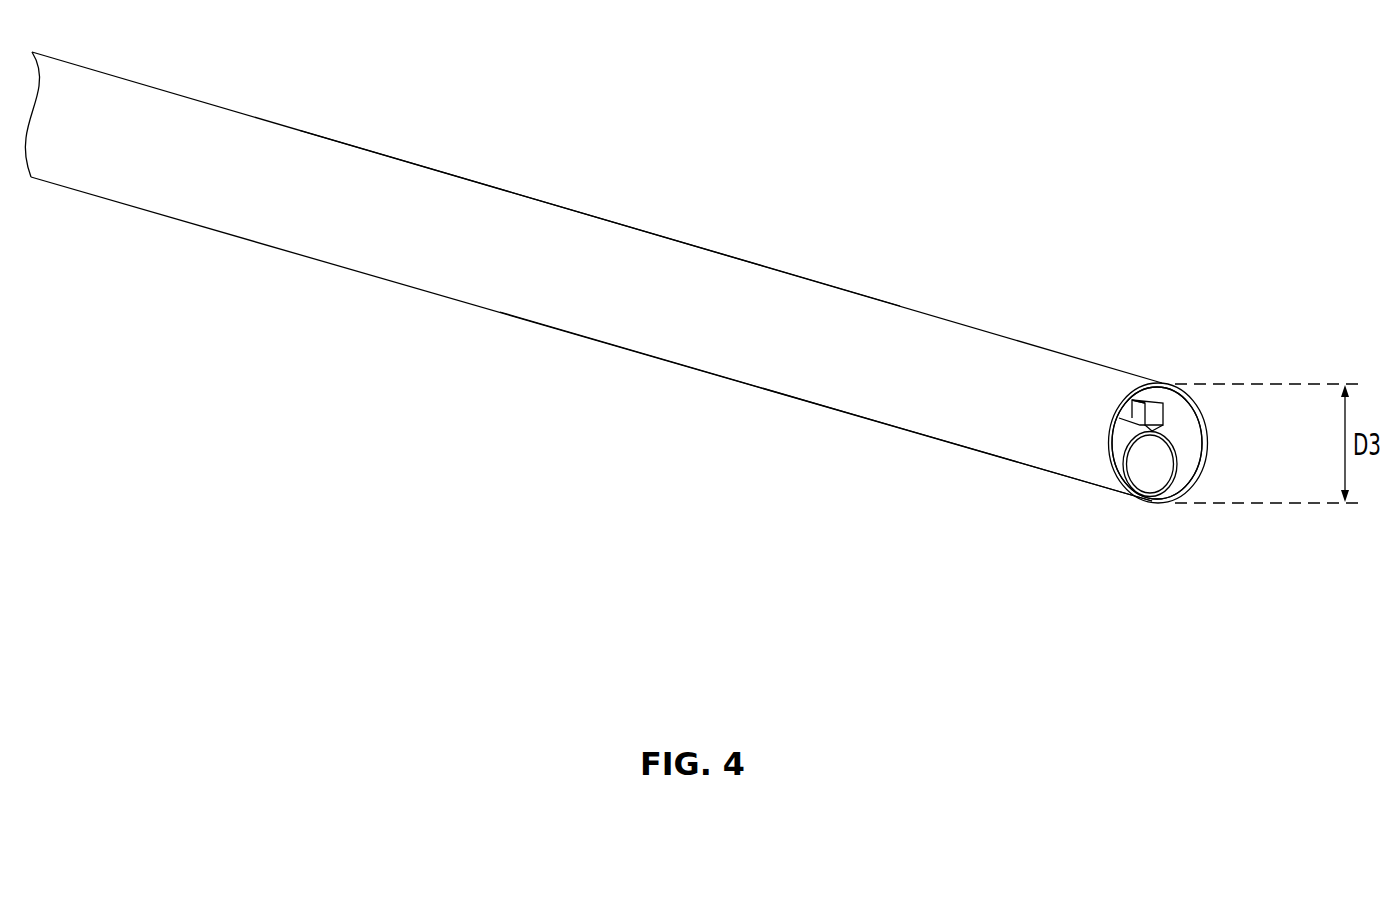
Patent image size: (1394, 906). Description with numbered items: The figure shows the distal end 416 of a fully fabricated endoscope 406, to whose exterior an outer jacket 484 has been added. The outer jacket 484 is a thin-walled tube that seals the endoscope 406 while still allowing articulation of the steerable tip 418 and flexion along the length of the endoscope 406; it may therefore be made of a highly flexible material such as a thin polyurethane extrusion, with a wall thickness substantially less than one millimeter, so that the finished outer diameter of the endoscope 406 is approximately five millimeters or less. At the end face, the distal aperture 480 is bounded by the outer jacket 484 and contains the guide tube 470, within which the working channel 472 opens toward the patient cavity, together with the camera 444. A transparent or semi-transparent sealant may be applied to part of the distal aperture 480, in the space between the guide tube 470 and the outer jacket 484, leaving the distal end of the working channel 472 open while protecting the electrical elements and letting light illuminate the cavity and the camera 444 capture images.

The endoscope 406 is at (350, 82).
The outer jacket 484 is at (643, 239).
The distal end 416 is at (690, 432).
The steerable tip 418 is at (1000, 546).
The camera 444 is at (1127, 404).
The guide tube 470 is at (1122, 448).
The working channel 472 is at (1170, 481).
The distal aperture 480 is at (1208, 436).